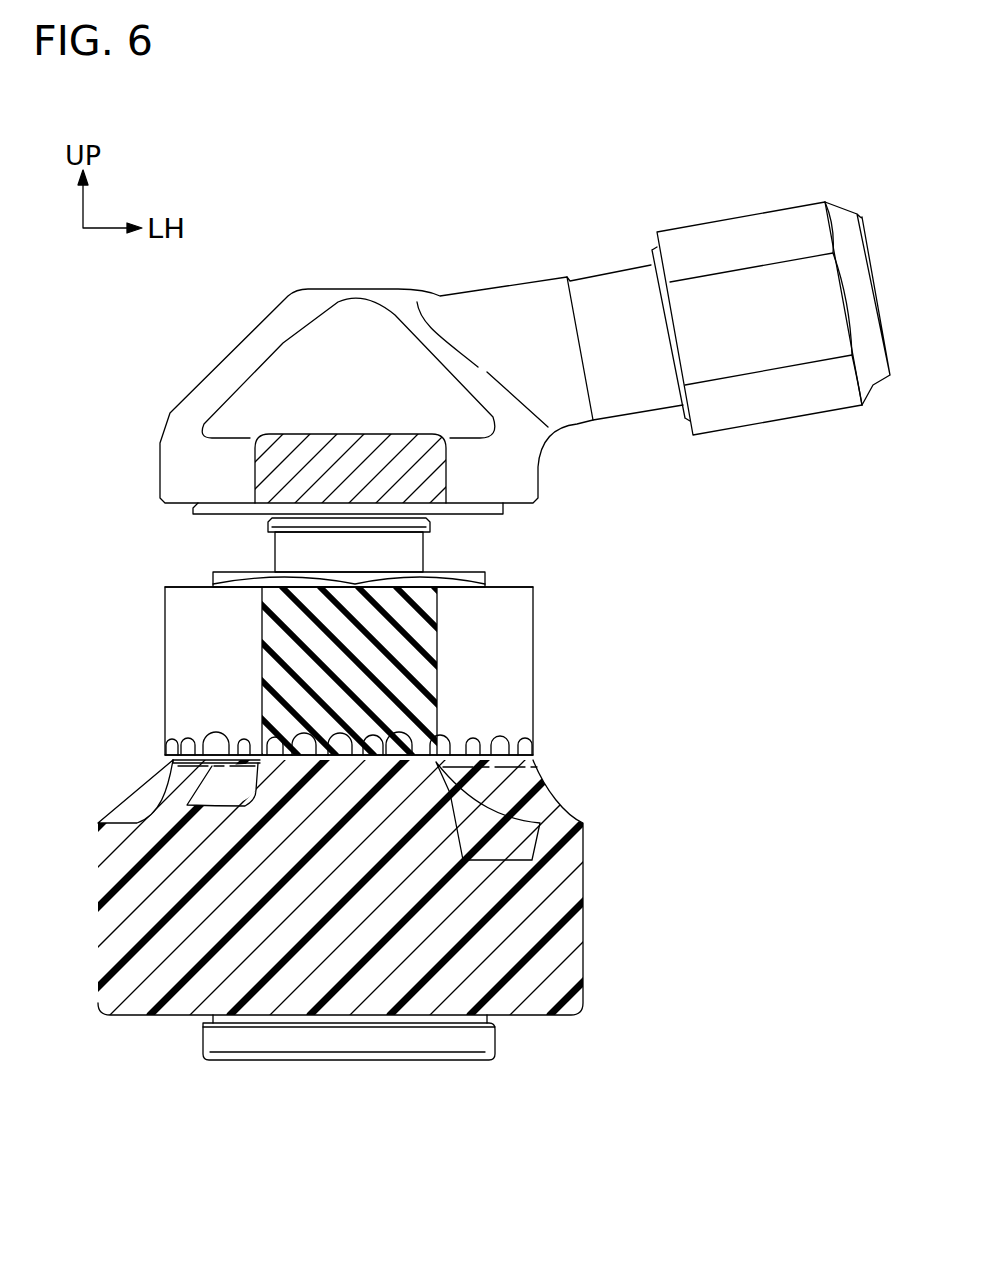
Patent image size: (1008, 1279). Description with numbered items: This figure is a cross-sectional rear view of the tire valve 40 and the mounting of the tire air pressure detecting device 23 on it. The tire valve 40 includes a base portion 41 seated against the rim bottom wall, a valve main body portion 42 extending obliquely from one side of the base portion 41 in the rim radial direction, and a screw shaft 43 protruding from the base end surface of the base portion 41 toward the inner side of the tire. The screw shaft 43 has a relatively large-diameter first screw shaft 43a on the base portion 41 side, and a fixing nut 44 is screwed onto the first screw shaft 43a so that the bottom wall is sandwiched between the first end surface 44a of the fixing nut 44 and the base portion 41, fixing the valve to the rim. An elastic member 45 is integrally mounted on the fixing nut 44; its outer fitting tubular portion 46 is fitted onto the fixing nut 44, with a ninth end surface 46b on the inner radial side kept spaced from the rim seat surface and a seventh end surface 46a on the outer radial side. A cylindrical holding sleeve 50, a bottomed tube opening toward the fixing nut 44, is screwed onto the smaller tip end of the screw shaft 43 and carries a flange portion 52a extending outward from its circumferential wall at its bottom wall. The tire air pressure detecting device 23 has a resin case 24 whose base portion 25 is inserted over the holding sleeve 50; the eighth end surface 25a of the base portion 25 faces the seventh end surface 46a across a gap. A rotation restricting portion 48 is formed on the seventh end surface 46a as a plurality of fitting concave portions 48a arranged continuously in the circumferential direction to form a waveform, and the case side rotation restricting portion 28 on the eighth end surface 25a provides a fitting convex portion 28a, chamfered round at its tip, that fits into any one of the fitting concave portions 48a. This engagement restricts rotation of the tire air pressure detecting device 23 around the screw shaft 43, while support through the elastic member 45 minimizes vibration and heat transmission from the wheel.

The tire valve 40 is at (752, 208).
The base portion 41 is at (248, 352).
The valve main body portion 42 is at (607, 292).
The screw shaft 43 is at (469, 537).
The first screw shaft 43a is at (408, 550).
The fixing nut 44 is at (444, 564).
The first end surface 44a is at (453, 572).
The elastic member 45 is at (372, 695).
The outer fitting tubular portion 46 is at (372, 695).
The seventh end surface 46a is at (372, 737).
The ninth end surface 46b is at (508, 580).
The rotation restricting portion 48 is at (555, 773).
The fitting concave portions 48a is at (443, 742).
The case side rotation restricting portion 28 is at (208, 708).
The fitting convex portion 28a is at (348, 745).
The base portion 25 is at (404, 875).
The eighth end surface 25a is at (192, 761).
The case 24 is at (404, 887).
The tire air pressure detecting device 23 is at (404, 887).
The holding sleeve 50 is at (378, 1092).
The flange portion 52a is at (400, 1040).